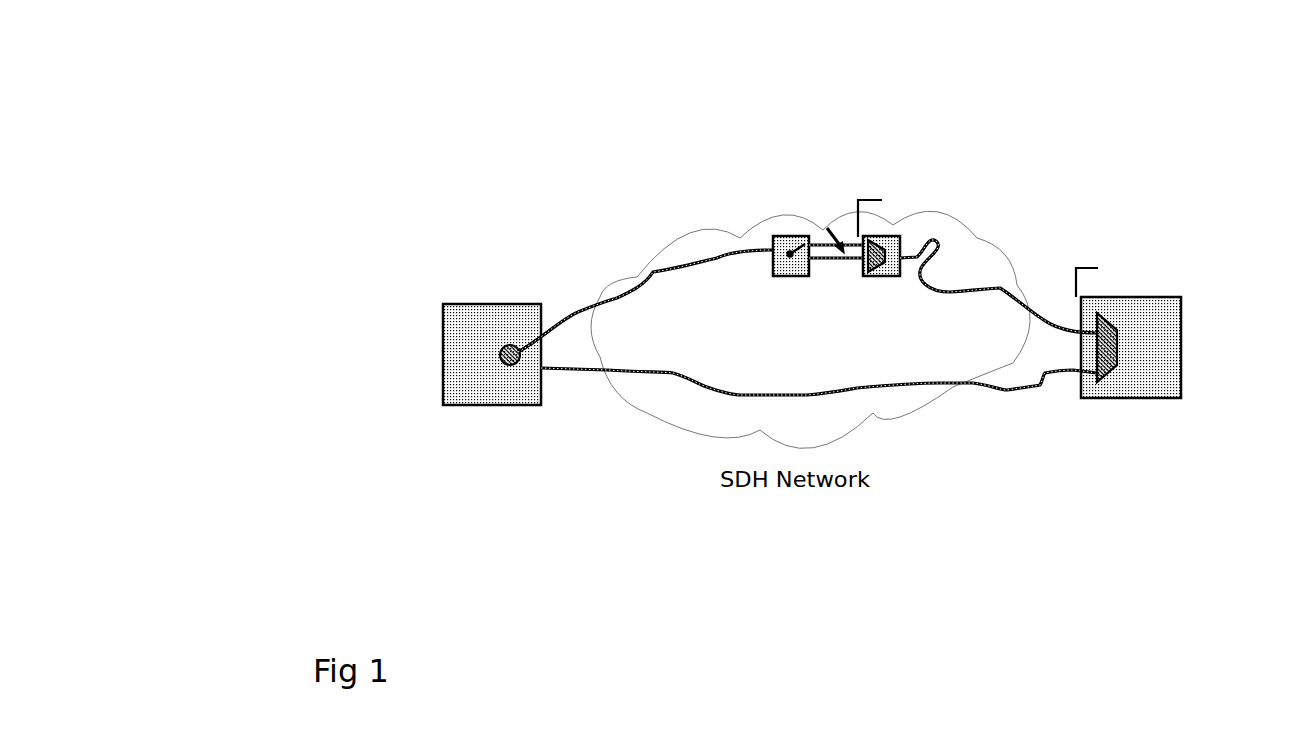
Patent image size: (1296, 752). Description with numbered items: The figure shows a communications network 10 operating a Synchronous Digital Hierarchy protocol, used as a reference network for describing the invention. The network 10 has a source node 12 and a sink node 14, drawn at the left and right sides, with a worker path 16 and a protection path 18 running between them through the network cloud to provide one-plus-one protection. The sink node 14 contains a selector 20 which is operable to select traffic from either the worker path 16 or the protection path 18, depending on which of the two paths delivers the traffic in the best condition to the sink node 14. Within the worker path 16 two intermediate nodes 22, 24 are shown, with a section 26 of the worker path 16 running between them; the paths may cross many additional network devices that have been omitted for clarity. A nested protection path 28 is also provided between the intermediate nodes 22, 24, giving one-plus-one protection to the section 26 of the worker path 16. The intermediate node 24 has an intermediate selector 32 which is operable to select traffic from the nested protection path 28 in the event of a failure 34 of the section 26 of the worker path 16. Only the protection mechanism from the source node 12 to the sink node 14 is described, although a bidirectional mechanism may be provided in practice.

The communications network 10 is at (498, 105).
The source node 12 is at (443, 304).
The sink node 14 is at (1181, 297).
The worker path 16 is at (578, 312).
The protection path 18 is at (642, 372).
The selector 20 is at (1118, 345).
The intermediate node 22 is at (773, 237).
The intermediate node 24 is at (900, 237).
The section of the worker path 26 is at (817, 237).
The nested protection path 28 is at (840, 258).
The intermediate selector 32 is at (867, 273).
The failure 34 is at (827, 228).